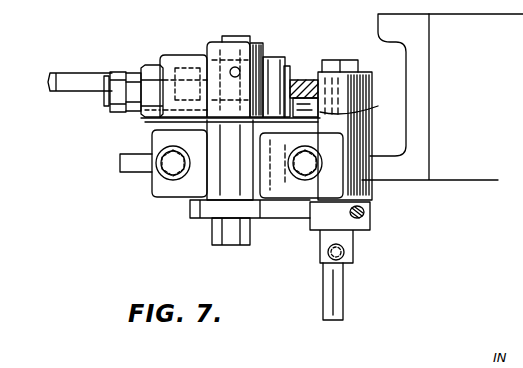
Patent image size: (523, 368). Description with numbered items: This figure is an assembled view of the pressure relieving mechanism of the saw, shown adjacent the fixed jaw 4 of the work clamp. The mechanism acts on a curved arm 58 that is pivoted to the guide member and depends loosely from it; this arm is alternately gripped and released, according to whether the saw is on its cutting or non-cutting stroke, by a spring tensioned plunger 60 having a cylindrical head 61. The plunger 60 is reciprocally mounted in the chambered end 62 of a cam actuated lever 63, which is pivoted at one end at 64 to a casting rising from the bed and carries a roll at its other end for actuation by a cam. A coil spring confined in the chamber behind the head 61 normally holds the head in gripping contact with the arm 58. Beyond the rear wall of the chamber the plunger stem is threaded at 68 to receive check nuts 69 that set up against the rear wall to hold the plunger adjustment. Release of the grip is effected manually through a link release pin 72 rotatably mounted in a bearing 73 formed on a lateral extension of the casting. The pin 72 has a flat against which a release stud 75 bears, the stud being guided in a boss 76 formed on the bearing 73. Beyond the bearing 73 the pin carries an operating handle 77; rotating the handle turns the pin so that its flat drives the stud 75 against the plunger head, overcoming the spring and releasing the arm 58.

The fixed jaw 4 is at (431, 97).
The curved arm 58 is at (314, 79).
The spring tensioned plunger 60 is at (151, 70).
The cylindrical head 61 is at (288, 73).
The chambered end 62 is at (186, 53).
The cam actuated lever 63 is at (78, 70).
The pivot 64 is at (229, 36).
The threaded plunger stem 68 is at (104, 100).
The check nuts 69 is at (126, 115).
The link release pin 72 is at (372, 82).
The bearing 73 is at (372, 122).
The release stud 75 is at (302, 78).
The boss 76 is at (378, 106).
The operating handle 77 is at (343, 288).